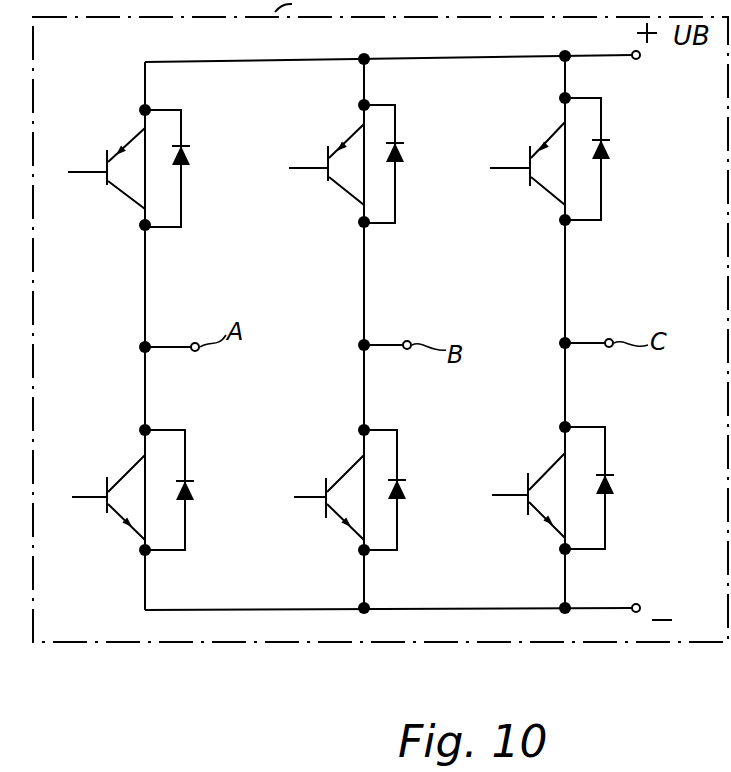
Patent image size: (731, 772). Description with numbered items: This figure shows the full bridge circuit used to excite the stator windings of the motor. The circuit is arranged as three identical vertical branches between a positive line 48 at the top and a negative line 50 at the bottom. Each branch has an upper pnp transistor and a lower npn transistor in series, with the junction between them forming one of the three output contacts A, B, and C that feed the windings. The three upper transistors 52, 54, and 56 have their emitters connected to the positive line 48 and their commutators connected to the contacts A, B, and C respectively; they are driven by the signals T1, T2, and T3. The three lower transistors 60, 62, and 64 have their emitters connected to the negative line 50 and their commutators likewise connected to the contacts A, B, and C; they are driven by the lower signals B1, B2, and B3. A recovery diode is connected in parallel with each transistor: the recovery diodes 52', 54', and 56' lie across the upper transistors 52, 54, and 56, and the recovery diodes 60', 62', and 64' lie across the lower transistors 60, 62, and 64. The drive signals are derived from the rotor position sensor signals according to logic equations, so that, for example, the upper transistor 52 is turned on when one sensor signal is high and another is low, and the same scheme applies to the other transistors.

The positive line 48 is at (250, 63).
The negative line 50 is at (450, 606).
The upper transistor 52 is at (103, 154).
The recovery diode 52' is at (199, 168).
The upper transistor 54 is at (322, 154).
The recovery diode 54' is at (412, 164).
The upper transistor 56 is at (524, 153).
The recovery diode 56' is at (617, 159).
The lower transistor 60 is at (101, 483).
The recovery diode 60' is at (200, 492).
The lower transistor 62 is at (324, 481).
The recovery diode 62' is at (412, 490).
The lower transistor 64 is at (525, 482).
The recovery diode 64' is at (617, 488).